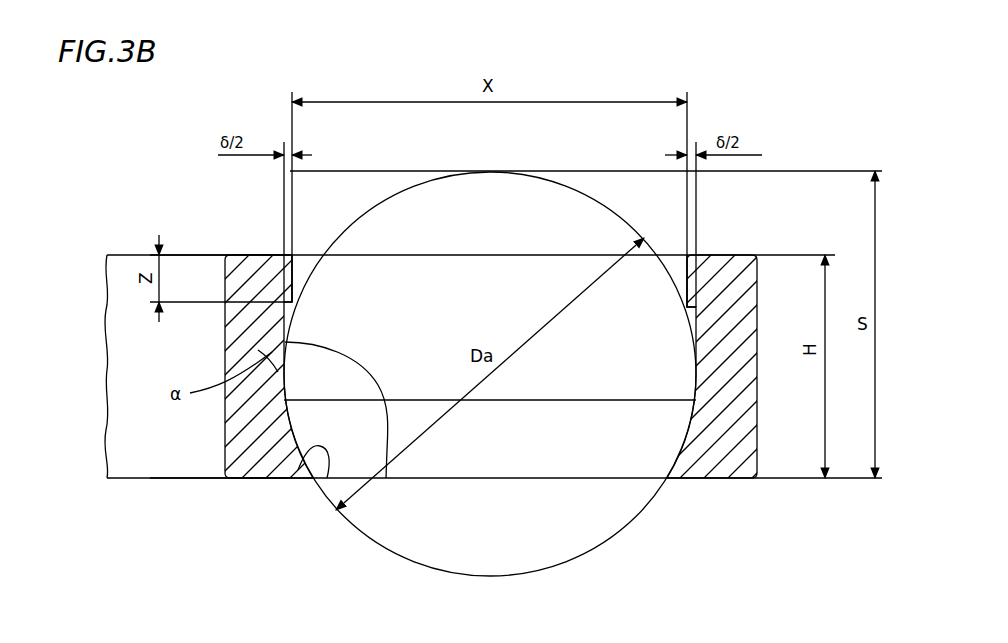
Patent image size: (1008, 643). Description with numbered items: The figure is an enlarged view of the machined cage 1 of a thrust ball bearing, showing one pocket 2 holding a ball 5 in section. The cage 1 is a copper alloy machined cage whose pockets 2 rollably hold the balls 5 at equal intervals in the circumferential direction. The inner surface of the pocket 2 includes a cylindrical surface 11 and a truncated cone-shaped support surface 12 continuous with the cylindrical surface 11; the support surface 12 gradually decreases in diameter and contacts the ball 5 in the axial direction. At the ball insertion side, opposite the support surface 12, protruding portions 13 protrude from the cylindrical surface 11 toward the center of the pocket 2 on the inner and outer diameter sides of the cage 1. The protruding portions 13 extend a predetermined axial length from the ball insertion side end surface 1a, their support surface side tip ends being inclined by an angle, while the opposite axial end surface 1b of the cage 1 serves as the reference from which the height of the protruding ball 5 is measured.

The machined cage 1 is at (737, 255).
The ball insertion side end surface 1a is at (260, 255).
The axial end surface of a support surface side 1b is at (260, 478).
The pocket 2 is at (345, 485).
The ball 5 is at (630, 520).
The cylindrical surface 11 is at (386, 478).
The truncated cone-shaped support surface 12 is at (327, 478).
The protruding portion 13 is at (296, 290).